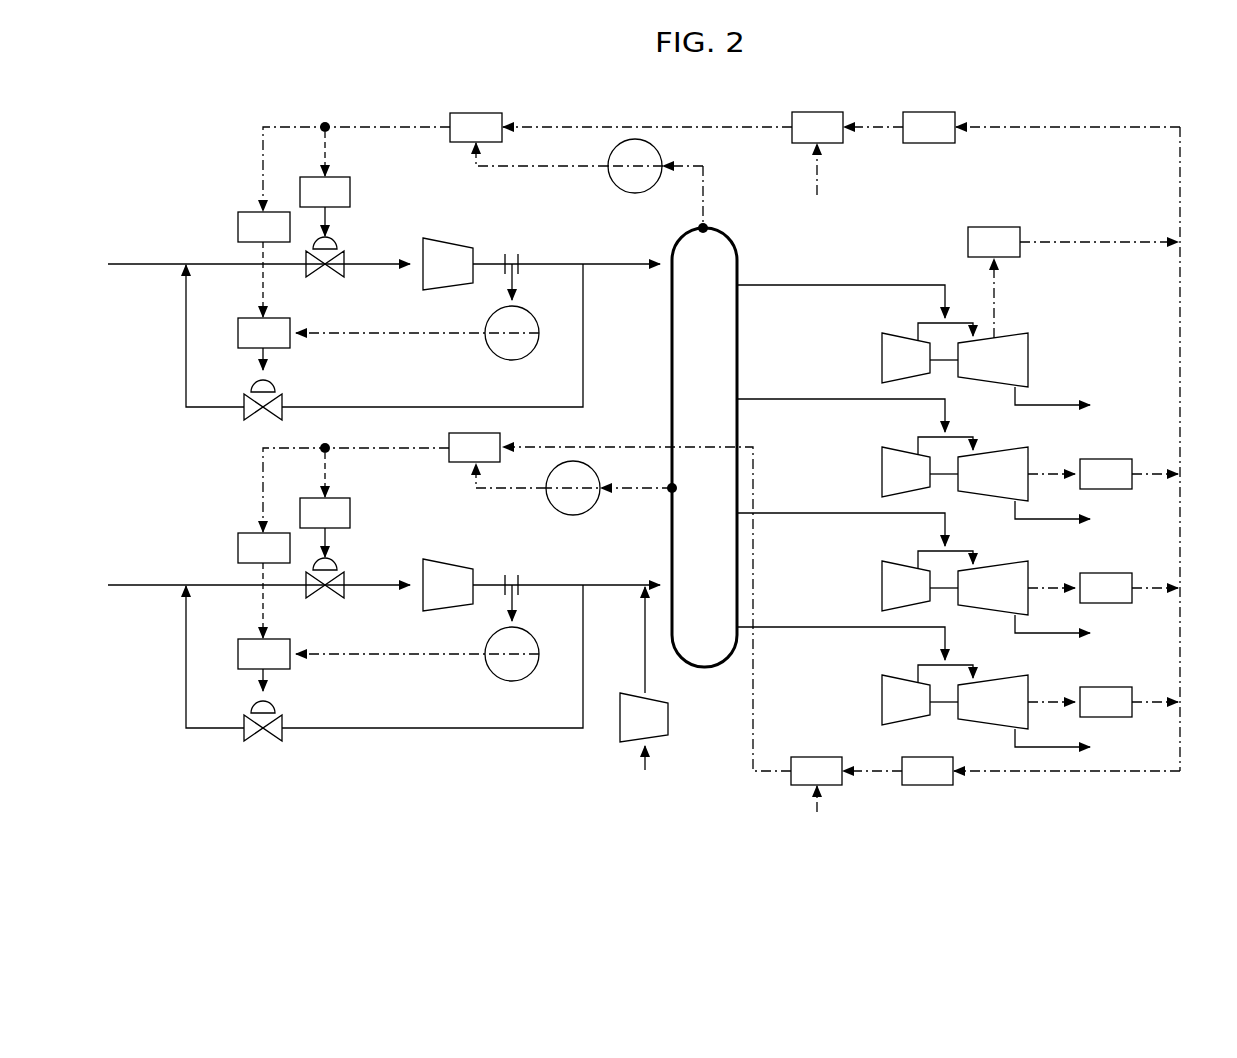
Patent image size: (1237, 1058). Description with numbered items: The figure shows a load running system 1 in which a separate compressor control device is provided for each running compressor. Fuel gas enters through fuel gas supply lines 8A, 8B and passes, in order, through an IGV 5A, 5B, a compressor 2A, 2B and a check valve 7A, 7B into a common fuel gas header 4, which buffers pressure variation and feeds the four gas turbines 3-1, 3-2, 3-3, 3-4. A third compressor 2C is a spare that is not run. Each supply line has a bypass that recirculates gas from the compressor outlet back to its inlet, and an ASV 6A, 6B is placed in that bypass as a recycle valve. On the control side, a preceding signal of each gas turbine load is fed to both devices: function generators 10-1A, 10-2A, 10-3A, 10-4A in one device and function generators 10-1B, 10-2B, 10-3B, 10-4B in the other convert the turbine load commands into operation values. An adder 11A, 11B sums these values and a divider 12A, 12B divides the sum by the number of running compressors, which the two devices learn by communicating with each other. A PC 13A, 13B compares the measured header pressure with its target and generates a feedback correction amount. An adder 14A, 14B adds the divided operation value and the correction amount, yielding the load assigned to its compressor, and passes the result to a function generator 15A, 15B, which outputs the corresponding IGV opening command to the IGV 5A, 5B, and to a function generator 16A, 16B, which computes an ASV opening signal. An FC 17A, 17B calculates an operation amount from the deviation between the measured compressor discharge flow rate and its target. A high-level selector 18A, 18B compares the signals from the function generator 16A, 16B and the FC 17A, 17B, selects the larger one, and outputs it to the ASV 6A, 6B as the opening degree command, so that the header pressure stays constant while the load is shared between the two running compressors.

The load running system 1 is at (1206, 133).
The compressor 2A is at (473, 258).
The compressor 2B is at (473, 579).
The compressor 2C is at (660, 740).
The gas turbine 3-1 is at (873, 352).
The gas turbine 3-2 is at (873, 466).
The gas turbine 3-3 is at (873, 580).
The gas turbine 3-4 is at (873, 694).
The fuel gas header 4 is at (671, 378).
The IGV 5A is at (342, 280).
The IGV 5B is at (342, 601).
The ASV 6A is at (282, 407).
The ASV 6B is at (282, 728).
The check valve 7A is at (612, 256).
The check valve 7B is at (612, 577).
The fuel gas supply line 8A is at (128, 266).
The fuel gas supply line 8B is at (128, 587).
The function generator 10-1A is at (1071, 254).
The function generator 10-1B is at (995, 226).
The function generator 10-2A is at (1079, 450).
The function generator 10-2B is at (1098, 458).
The function generator 10-3A is at (1079, 564).
The function generator 10-3B is at (1100, 555).
The function generator 10-4A is at (1079, 678).
The function generator 10-4B is at (1108, 670).
The adder 11A is at (942, 112).
The adder 11B is at (938, 786).
The divider 12A is at (840, 112).
The divider 12B is at (790, 780).
The PC 13A is at (660, 158).
The PC 13B is at (548, 502).
The adder 14A is at (490, 112).
The adder 14B is at (452, 440).
The function generator 15A is at (350, 195).
The function generator 15B is at (350, 513).
The function generator 16A is at (236, 224).
The function generator 16B is at (236, 545).
The FC 17A is at (490, 342).
The FC 17B is at (498, 681).
The high-level selector 18A is at (238, 332).
The high-level selector 18B is at (238, 653).